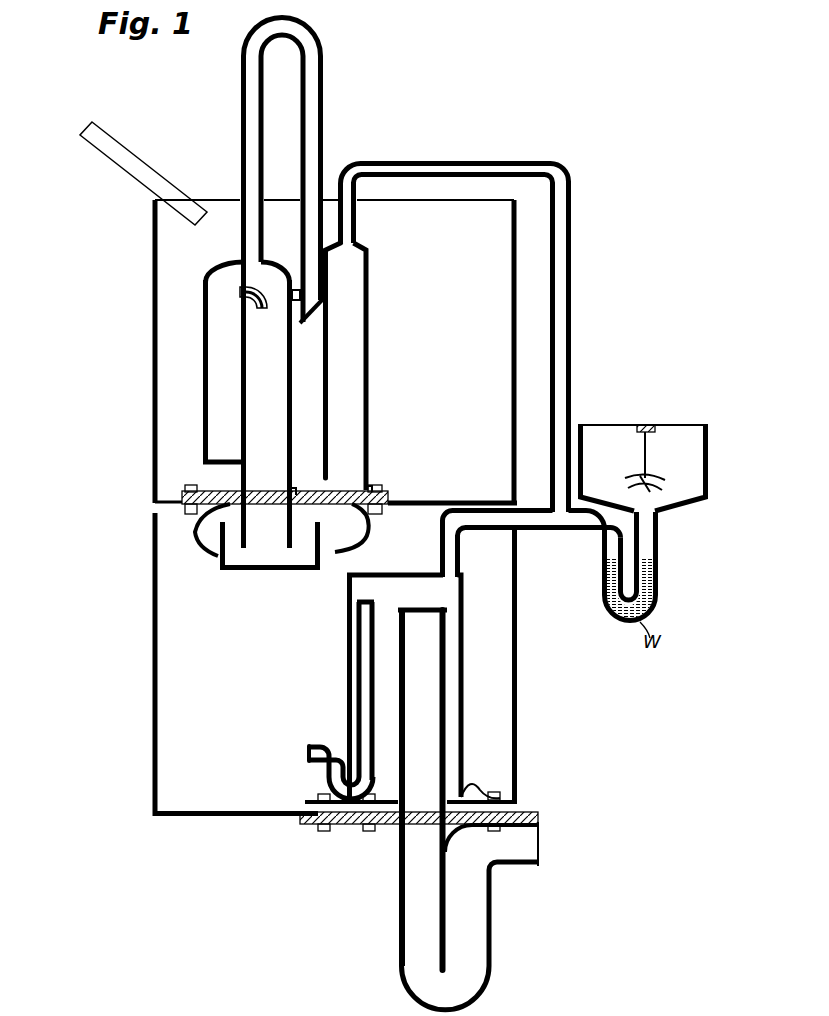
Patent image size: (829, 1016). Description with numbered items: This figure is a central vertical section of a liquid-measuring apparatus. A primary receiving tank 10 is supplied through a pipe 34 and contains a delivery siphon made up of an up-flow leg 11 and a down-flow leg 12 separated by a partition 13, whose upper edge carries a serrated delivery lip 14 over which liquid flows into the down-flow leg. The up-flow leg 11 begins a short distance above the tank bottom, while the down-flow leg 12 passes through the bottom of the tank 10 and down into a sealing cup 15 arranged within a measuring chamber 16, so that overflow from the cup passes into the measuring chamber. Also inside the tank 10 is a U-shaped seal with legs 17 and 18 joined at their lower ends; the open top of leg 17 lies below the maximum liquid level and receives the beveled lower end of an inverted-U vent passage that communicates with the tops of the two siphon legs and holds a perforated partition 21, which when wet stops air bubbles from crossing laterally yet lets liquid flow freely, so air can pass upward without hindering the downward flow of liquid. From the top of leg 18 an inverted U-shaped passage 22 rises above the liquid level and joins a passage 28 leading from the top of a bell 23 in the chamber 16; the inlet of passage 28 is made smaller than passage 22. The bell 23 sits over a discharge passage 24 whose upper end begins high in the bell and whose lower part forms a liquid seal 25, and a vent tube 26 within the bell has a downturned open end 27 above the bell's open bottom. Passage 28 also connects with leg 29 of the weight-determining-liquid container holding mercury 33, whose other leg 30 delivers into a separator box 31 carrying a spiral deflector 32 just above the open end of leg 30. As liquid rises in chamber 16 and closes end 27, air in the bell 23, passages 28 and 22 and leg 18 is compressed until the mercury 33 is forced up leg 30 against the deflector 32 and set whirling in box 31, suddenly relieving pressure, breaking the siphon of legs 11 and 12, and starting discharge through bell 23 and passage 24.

The primary receiving tank 10 is at (152, 385).
The up-flow leg 11 is at (215, 431).
The down-flow leg 12 is at (270, 405).
The partition 13 is at (326, 137).
The serrated delivery lip 14 is at (242, 297).
The sealing cup 15 is at (222, 553).
The measuring chamber 16 is at (154, 690).
The leg of U-shaped seal 17 is at (319, 360).
The leg of U-shaped seal 18 is at (352, 367).
The perforated partition 21 is at (332, 162).
The inverted U-shaped passage 22 is at (572, 293).
The bell 23 is at (470, 686).
The discharge passage 24 is at (410, 830).
The liquid seal 25 is at (478, 938).
The vent tube 26 is at (362, 672).
The downwardly turned open end 27 is at (312, 751).
The passage 28 is at (568, 531).
The leg 29 is at (604, 580).
The leg 30 is at (660, 553).
The separator box 31 is at (710, 466).
The spiral deflector 32 is at (650, 480).
The mercury 33 is at (657, 587).
The pipe 34 is at (95, 147).